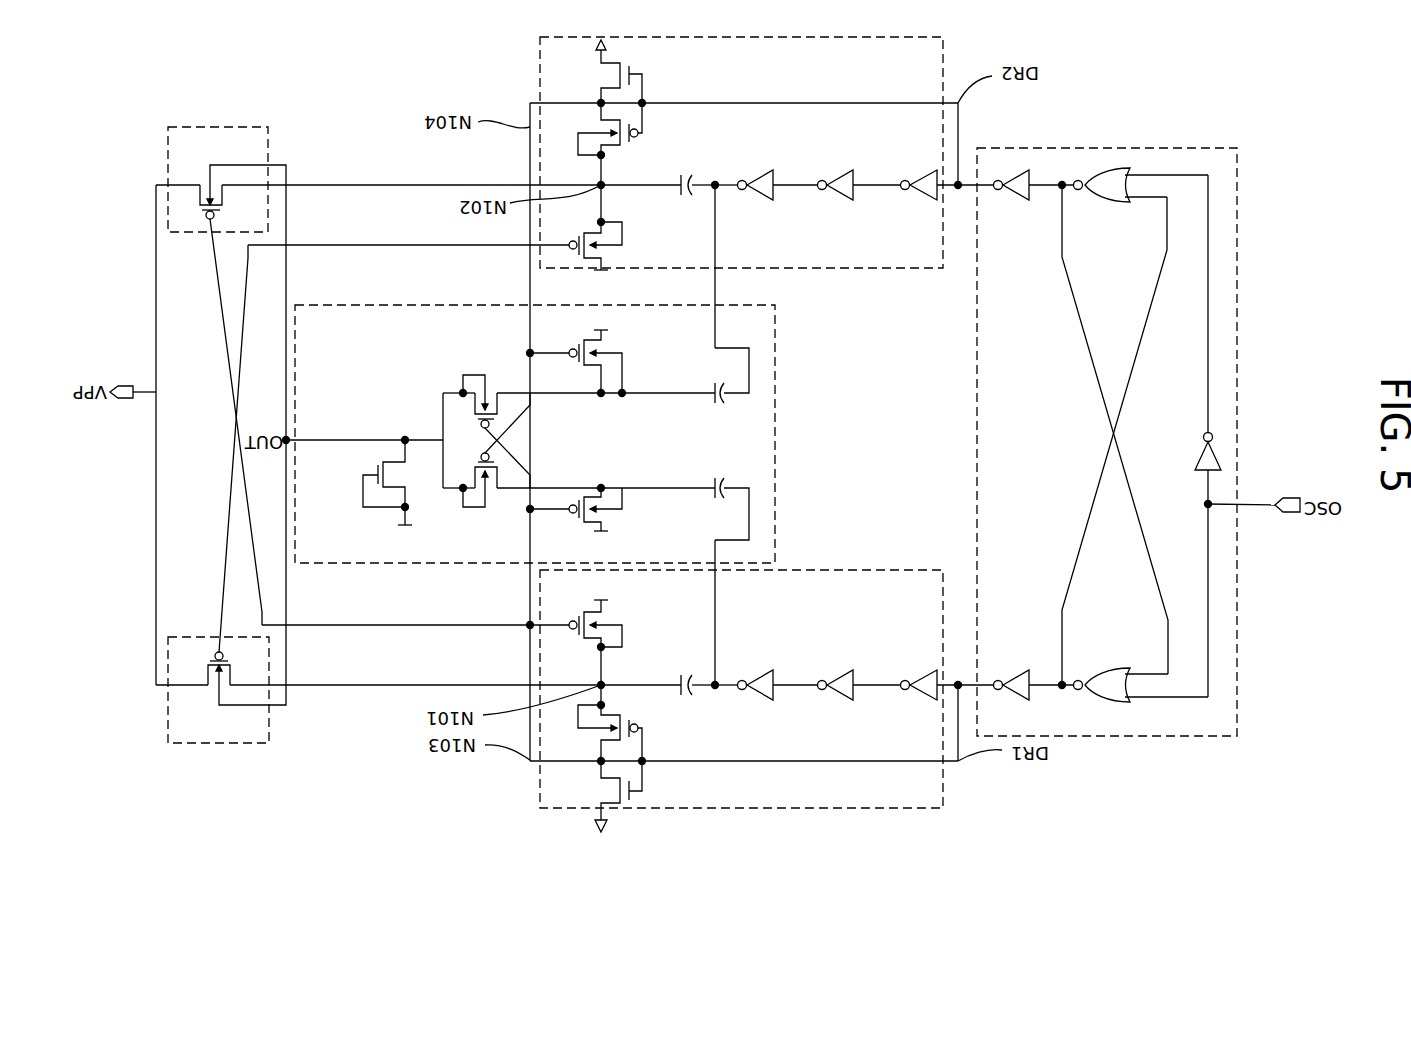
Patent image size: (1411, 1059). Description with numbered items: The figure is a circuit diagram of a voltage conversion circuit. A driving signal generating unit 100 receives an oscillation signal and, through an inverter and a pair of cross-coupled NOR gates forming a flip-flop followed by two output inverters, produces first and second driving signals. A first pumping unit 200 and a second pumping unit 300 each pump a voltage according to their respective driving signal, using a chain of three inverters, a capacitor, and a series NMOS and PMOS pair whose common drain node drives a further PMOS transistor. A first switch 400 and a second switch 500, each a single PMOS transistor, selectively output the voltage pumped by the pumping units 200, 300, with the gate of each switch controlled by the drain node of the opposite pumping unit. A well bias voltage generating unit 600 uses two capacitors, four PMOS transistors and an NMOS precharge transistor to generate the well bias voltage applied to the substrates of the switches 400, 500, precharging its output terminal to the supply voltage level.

The driving signal generating unit 100 is at (1098, 148).
The first pumping unit 200 is at (943, 795).
The second pumping unit 300 is at (540, 60).
The first switch 400 is at (218, 743).
The second switch 500 is at (218, 127).
The well bias voltage generating unit 600 is at (778, 446).